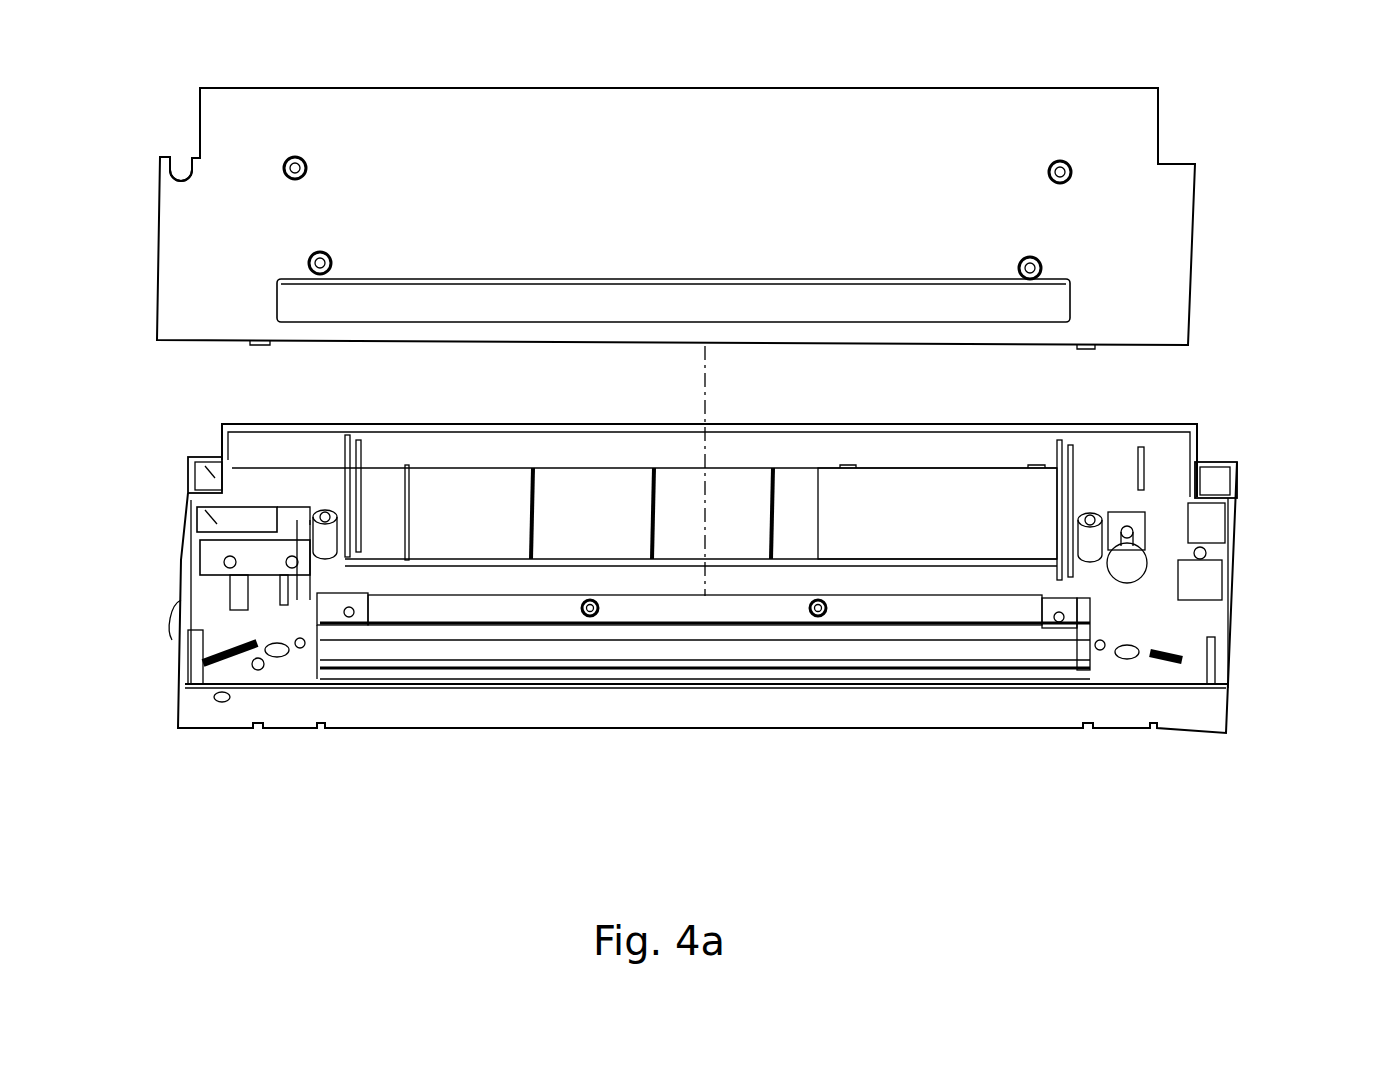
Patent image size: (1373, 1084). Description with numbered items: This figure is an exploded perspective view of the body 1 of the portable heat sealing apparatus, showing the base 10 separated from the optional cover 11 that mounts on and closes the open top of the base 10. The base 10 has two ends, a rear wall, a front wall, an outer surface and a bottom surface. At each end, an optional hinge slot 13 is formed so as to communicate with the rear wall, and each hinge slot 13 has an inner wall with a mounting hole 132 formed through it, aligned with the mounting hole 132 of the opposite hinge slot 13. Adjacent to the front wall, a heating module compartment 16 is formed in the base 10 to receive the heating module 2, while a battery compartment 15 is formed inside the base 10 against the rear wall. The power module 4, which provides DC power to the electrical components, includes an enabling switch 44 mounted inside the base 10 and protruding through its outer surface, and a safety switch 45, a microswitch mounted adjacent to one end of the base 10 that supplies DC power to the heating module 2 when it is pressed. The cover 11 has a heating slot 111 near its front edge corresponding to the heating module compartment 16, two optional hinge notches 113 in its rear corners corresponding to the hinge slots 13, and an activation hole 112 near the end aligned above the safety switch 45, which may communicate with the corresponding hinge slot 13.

The body 1 is at (1283, 457).
The base 10 is at (1140, 427).
The cover 11 is at (1160, 228).
The heating slot 111 is at (543, 300).
The activation hole 112 is at (172, 172).
The hinge notch 113 is at (1160, 128).
The hinge slot 13 is at (195, 457).
The mounting hole 132 is at (220, 427).
The battery compartment 15 is at (565, 490).
The heating module compartment 16 is at (695, 610).
The heating module 2 is at (862, 665).
The power module 4 is at (952, 466).
The enabling switch 44 is at (173, 605).
The safety switch 45 is at (220, 507).